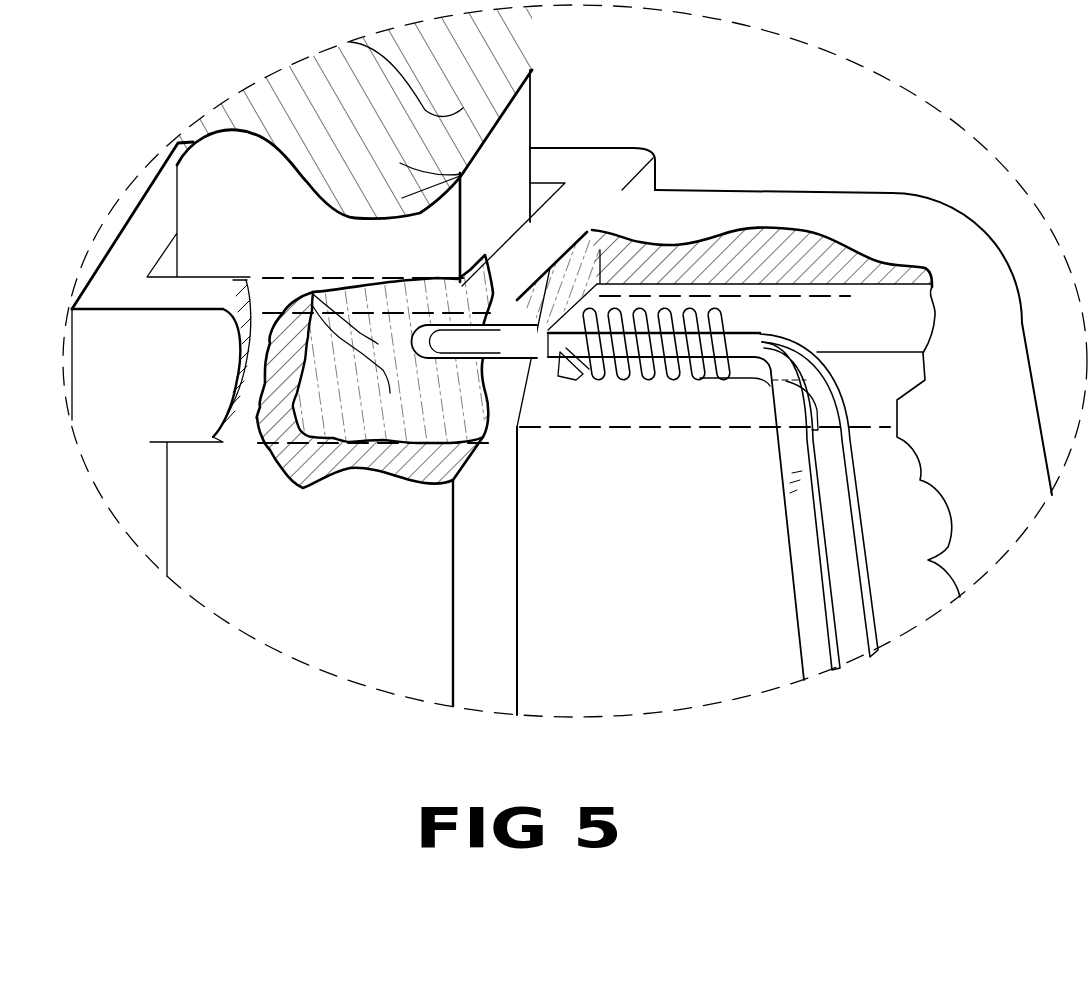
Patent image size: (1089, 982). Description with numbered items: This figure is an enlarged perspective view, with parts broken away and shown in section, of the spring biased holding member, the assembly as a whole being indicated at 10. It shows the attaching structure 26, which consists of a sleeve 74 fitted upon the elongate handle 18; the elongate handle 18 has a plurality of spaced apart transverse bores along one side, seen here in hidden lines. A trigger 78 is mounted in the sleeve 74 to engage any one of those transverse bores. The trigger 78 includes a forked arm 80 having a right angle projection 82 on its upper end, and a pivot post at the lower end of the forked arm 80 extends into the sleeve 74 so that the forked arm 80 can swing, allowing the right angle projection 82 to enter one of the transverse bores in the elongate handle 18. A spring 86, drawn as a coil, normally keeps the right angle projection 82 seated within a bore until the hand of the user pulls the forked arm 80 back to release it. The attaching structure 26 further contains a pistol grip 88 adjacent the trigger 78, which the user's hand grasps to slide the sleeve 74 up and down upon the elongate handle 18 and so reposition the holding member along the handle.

The valve assembly 10 is at (760, 157).
The elongate handle 18 is at (517, 635).
The attaching structure 26 is at (580, 137).
The sleeve 74 is at (634, 157).
The trigger 78 is at (777, 637).
The forked arm 80 is at (793, 547).
The right angle projection 82 is at (654, 382).
The spring 86 is at (594, 380).
The pistol grip 88 is at (1018, 360).